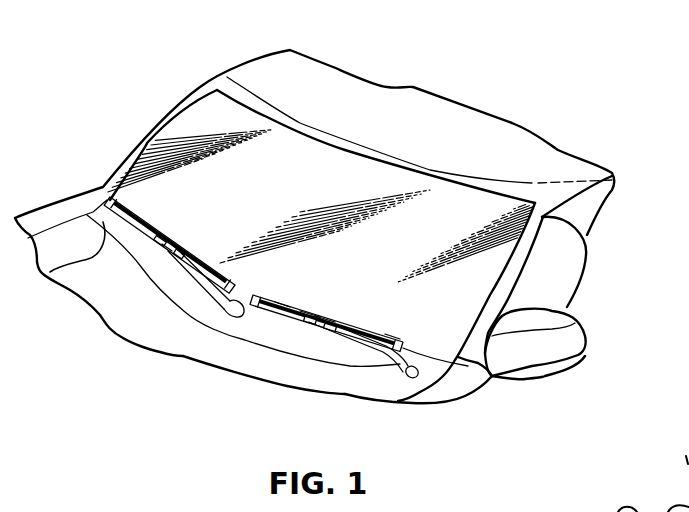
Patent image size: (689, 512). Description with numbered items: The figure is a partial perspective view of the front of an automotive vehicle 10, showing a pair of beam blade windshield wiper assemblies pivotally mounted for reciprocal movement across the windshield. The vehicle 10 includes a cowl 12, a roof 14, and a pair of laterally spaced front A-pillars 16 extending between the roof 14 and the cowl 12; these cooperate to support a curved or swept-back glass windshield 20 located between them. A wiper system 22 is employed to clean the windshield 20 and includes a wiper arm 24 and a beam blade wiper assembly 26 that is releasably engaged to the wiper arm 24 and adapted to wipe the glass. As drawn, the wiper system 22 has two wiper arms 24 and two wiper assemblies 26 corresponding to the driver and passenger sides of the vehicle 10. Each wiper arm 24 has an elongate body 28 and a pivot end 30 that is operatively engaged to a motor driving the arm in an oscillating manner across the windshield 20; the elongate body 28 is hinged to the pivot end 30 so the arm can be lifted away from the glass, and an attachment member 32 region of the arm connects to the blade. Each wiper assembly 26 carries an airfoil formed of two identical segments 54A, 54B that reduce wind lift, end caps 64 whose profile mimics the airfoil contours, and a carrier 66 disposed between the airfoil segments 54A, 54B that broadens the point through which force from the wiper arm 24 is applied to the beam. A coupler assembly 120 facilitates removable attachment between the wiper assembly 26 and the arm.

The vehicle 10 is at (150, 86).
The cowl 12 is at (43, 275).
The roof 14 is at (453, 133).
The A-pillars 16 is at (200, 87).
The windshield 20 is at (297, 150).
The wiper system 22 is at (106, 293).
The wiper arm 24 is at (208, 312).
The wiper assembly 26 is at (132, 238).
The elongate body 28 is at (162, 268).
The pivot end 30 is at (232, 321).
The blade adapter 32 is at (149, 245).
The airfoil segment 54A is at (277, 324).
The airfoil segment 54B is at (384, 355).
The end caps 64 is at (250, 315).
The carrier 66 is at (306, 337).
The coupler assembly 120 is at (324, 341).